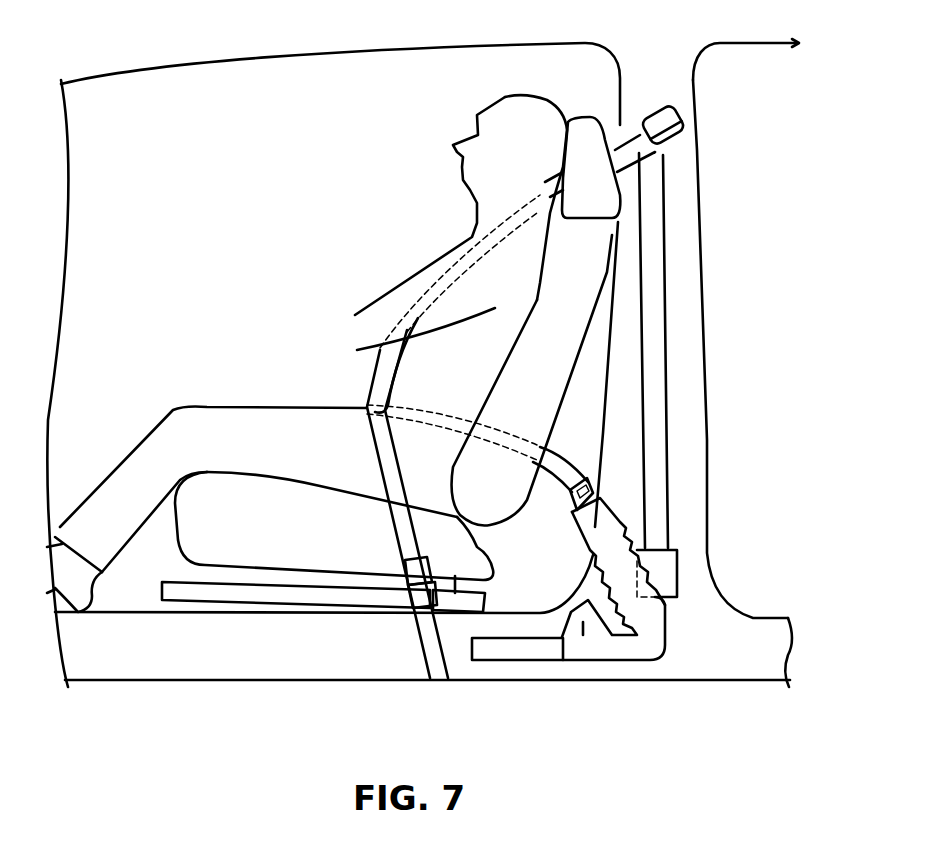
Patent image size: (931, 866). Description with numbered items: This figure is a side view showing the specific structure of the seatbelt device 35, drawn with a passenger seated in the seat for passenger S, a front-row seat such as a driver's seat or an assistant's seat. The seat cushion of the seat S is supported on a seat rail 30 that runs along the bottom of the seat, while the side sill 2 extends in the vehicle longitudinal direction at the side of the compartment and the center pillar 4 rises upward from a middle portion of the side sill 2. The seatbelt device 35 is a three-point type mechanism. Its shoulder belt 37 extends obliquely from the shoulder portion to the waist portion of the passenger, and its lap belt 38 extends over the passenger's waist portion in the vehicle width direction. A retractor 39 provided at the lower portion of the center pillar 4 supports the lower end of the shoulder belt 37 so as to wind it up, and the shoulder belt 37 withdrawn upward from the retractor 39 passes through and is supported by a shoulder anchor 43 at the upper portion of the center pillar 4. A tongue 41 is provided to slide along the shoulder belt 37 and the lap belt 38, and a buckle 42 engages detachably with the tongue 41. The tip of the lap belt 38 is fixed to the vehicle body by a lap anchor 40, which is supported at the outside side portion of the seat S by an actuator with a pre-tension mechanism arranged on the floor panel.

The side sill 2 is at (141, 667).
The center pillar 4 is at (712, 412).
The seat for passenger S is at (602, 116).
The seat rail 30 is at (162, 591).
The seatbelt device 35 is at (655, 318).
The shoulder belt 37 is at (376, 366).
The lap belt 38 is at (550, 450).
The retractor 39 is at (672, 557).
The lap anchor 40 is at (594, 490).
The tongue 41 is at (410, 570).
The buckle 42 is at (420, 603).
The shoulder anchor 43 is at (665, 153).